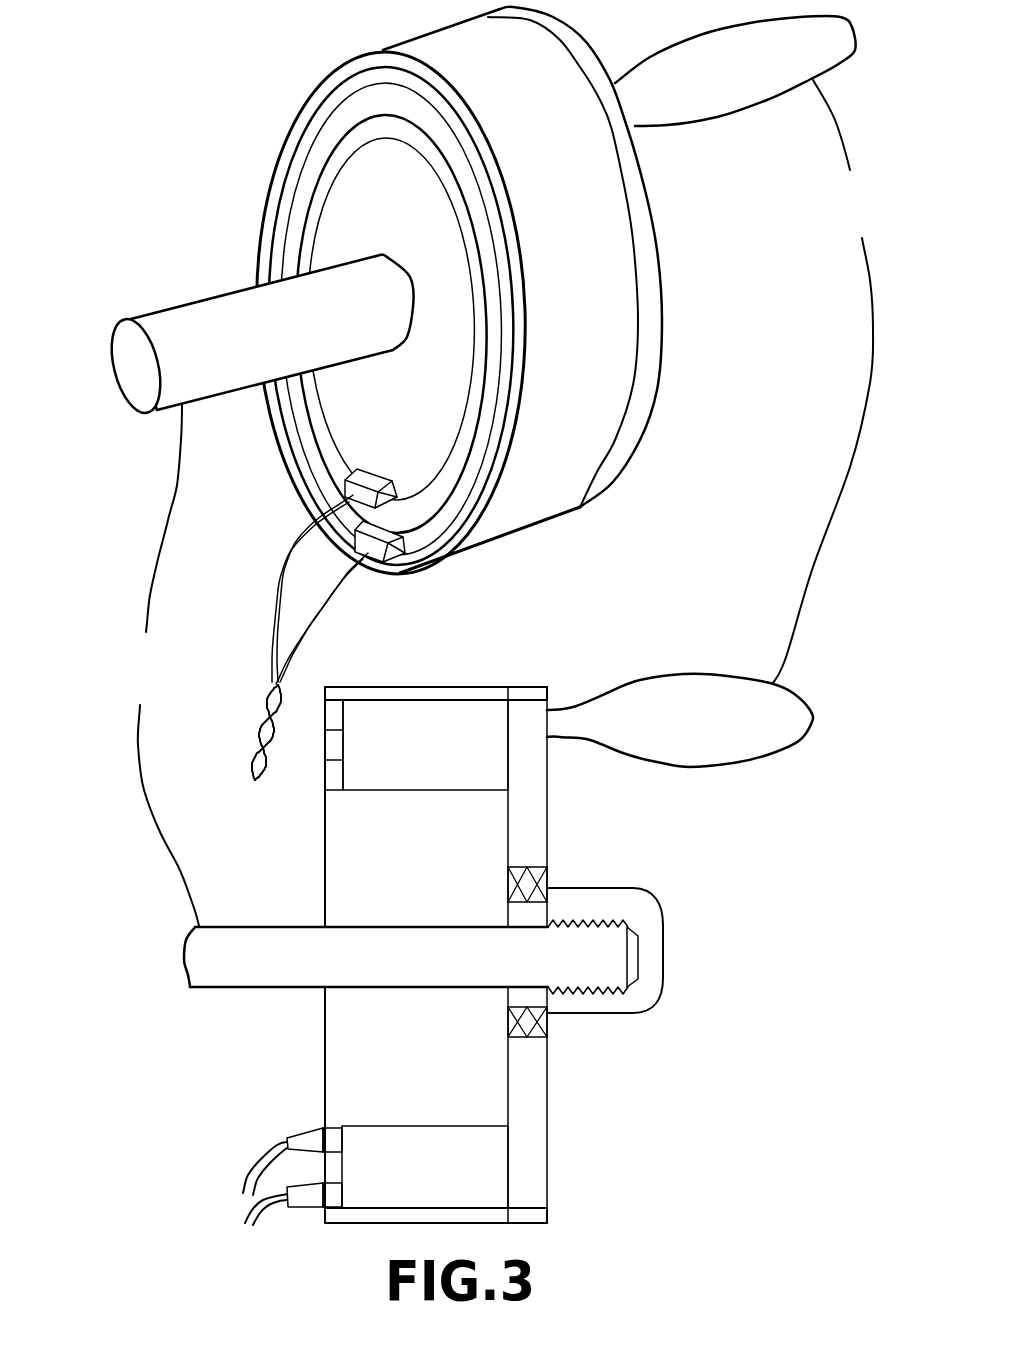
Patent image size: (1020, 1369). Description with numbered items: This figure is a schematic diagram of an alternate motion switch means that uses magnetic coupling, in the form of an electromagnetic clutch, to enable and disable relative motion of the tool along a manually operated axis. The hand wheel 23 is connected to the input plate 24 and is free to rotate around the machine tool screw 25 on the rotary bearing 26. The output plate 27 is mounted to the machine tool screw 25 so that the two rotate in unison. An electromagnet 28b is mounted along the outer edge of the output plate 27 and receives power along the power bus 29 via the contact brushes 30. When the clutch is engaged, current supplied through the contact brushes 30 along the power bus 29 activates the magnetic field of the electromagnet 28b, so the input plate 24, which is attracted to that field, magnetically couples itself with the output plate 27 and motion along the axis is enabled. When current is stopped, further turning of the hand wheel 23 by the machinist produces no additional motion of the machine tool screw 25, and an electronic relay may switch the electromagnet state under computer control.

The hand wheel 23 is at (710, 391).
The input plate 24 is at (612, 483).
The machine tool screw 25 is at (258, 593).
The rotary bearing 26 is at (548, 877).
The output plate 27 is at (477, 687).
The electromagnet 28b is at (437, 1103).
The power bus 29 is at (322, 173).
The contact brushes 30 is at (350, 500).